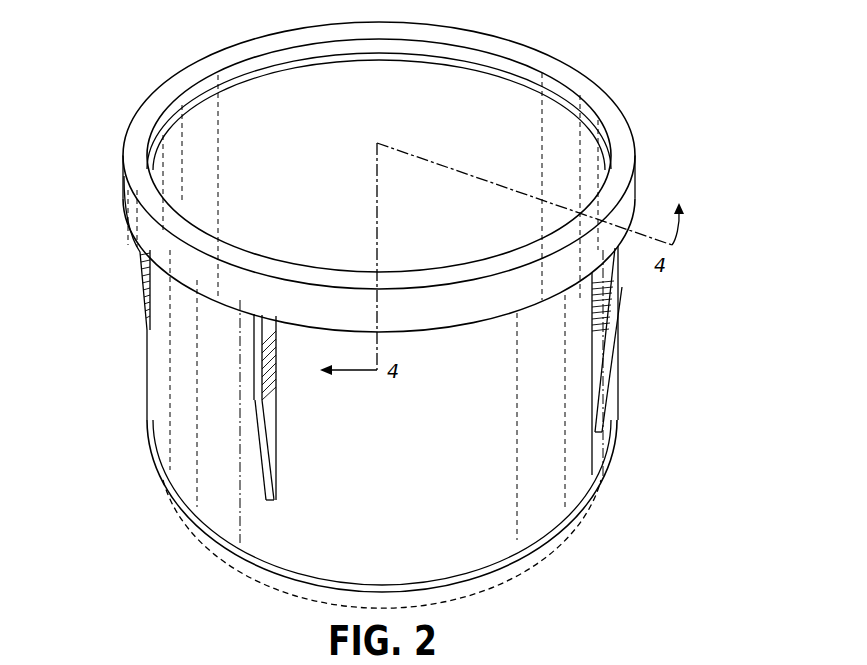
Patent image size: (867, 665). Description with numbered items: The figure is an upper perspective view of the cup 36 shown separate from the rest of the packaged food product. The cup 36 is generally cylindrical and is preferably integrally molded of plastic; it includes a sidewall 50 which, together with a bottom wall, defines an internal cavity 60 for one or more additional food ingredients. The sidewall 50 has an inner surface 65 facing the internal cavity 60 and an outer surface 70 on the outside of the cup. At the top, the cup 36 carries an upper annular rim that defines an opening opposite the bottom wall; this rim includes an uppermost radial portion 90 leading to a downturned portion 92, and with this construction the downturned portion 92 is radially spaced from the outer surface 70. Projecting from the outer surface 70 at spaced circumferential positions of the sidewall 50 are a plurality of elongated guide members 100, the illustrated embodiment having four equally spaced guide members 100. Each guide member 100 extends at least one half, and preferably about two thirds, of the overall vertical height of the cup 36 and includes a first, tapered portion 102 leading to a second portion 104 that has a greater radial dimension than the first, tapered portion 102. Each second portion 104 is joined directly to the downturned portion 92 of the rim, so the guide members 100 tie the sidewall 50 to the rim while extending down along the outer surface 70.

The cup 36 is at (682, 83).
The sidewall 50 is at (182, 478).
The internal cavity 60 is at (497, 122).
The inner surface 65 is at (318, 177).
The outer surface 70 is at (454, 476).
The uppermost radial portion 90 is at (192, 78).
The downturned portion 92 is at (123, 208).
The elongated guide member 100 is at (268, 390).
The first, tapered portion 102 is at (613, 372).
The second portion 104 is at (622, 287).